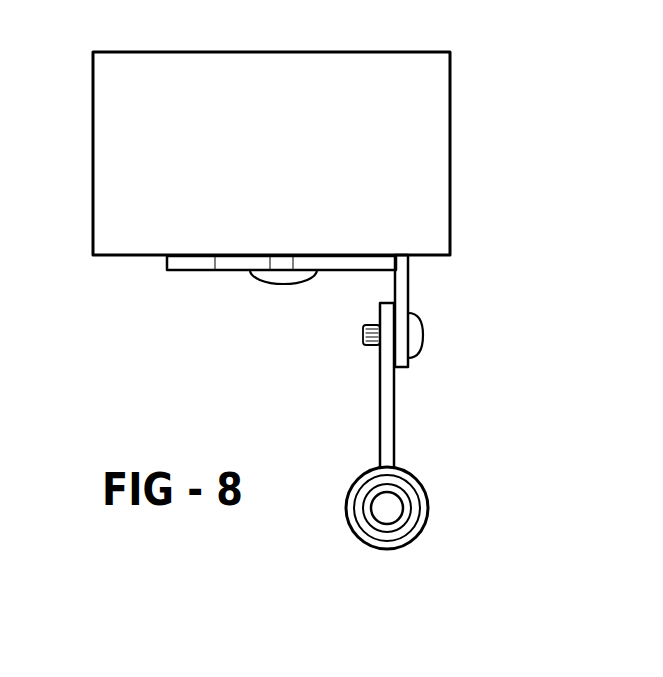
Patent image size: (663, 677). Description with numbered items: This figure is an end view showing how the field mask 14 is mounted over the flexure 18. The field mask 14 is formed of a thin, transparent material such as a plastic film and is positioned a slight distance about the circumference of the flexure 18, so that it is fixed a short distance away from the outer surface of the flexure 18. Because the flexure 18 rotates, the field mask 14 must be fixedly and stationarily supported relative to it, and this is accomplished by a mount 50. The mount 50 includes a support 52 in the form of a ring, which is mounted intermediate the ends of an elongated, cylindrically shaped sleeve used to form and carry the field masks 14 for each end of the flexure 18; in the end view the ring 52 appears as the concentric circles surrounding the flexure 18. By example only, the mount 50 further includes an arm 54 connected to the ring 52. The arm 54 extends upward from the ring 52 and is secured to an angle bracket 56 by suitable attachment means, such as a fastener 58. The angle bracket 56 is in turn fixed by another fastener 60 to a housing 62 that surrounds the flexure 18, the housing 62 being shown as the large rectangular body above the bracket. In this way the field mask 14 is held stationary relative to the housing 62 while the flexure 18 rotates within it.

The housing 62 is at (452, 165).
The mount 50 is at (367, 445).
The angle bracket 56 is at (342, 310).
The fastener 60 is at (277, 286).
The fastener 58 is at (423, 330).
The arm 54 is at (390, 428).
The support 52 is at (402, 507).
The field mask 14 is at (405, 484).
The flexure 18 is at (398, 508).